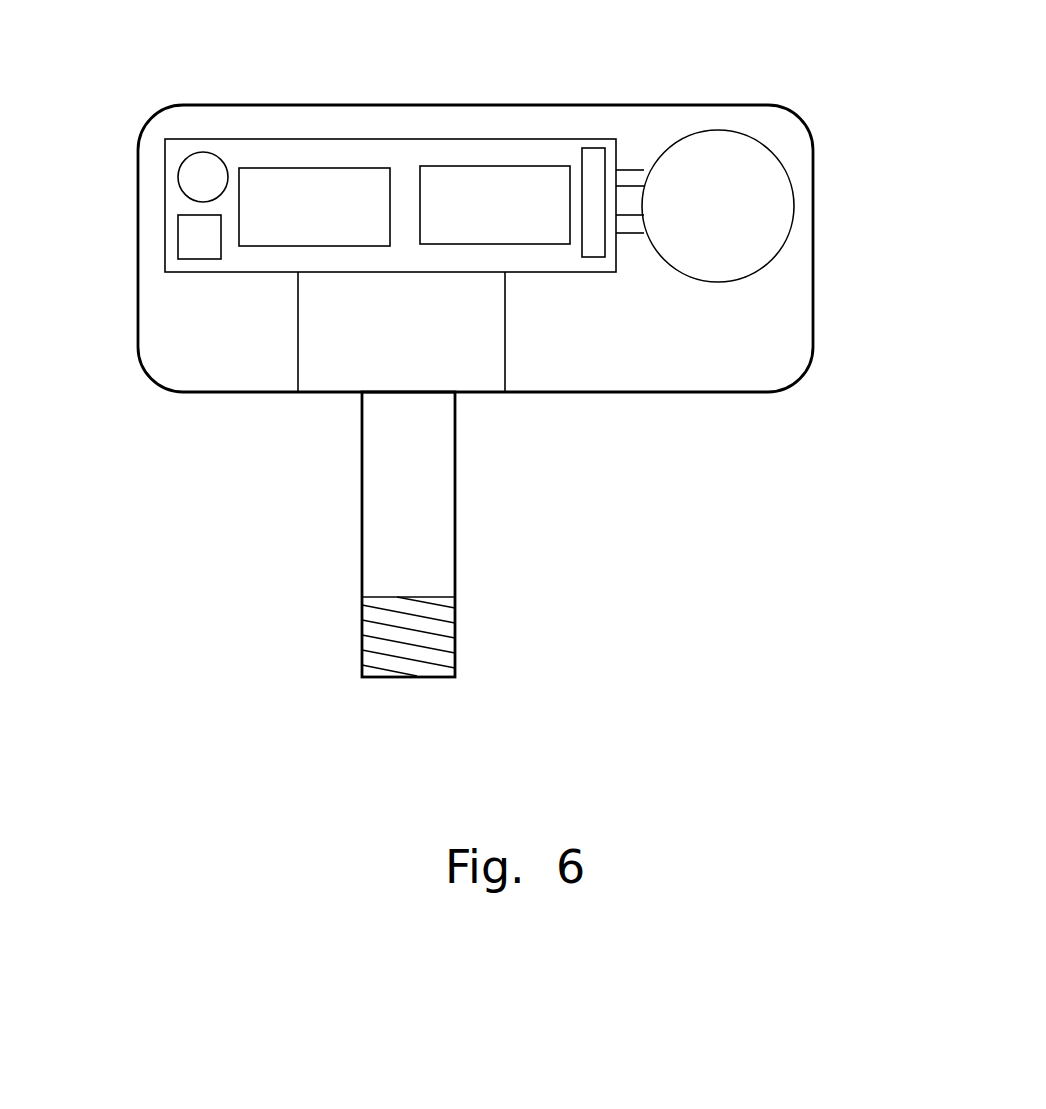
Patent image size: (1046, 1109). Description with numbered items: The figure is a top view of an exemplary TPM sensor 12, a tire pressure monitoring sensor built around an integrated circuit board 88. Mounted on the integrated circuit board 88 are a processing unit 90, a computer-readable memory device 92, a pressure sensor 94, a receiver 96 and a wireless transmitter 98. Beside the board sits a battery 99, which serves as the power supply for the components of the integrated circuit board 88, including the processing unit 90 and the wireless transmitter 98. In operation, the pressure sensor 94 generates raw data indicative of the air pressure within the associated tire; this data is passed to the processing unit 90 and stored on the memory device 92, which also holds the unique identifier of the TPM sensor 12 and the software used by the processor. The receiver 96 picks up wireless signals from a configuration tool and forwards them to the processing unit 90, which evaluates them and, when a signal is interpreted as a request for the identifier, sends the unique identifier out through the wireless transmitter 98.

The TPM sensor 12 is at (832, 131).
The integrated circuit board 88 is at (459, 148).
The processing unit 90 is at (318, 200).
The computer-readable memory device 92 is at (523, 192).
The pressure sensor 94 is at (203, 179).
The receiver 96 is at (188, 237).
The wireless transmitter 98 is at (597, 198).
The battery 99 is at (735, 217).